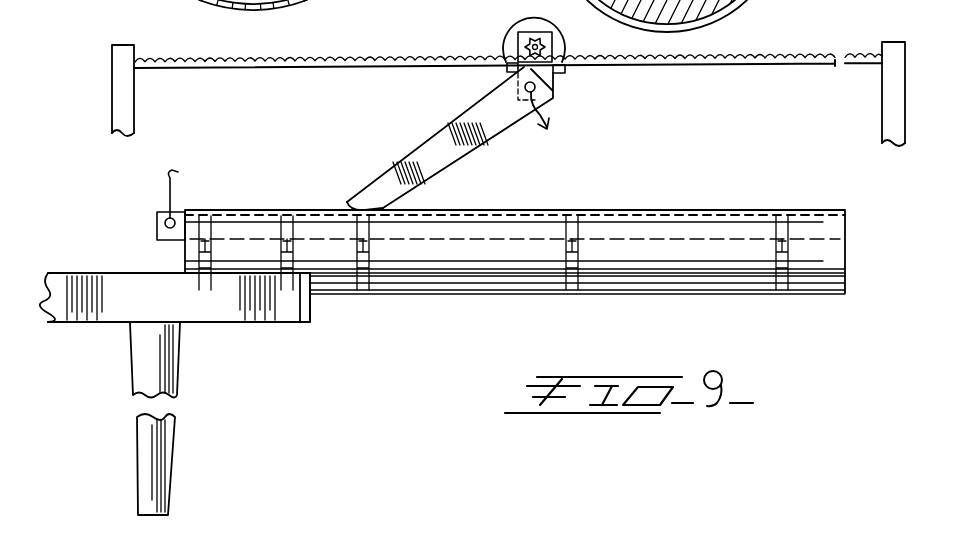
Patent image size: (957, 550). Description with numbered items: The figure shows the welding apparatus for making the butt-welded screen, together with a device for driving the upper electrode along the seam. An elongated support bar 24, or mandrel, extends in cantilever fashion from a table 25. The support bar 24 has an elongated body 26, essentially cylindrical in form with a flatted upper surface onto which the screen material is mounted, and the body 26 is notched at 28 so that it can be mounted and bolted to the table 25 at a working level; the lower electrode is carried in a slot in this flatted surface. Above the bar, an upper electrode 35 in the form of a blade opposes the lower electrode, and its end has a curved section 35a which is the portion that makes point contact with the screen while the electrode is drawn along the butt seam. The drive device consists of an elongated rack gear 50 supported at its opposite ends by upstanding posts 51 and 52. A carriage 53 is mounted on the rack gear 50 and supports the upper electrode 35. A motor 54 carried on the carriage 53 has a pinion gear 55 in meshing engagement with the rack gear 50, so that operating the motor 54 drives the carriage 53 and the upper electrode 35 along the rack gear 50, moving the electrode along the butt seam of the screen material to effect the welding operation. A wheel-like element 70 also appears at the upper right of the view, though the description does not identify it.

The support bar 24 is at (845, 240).
The table 25 is at (108, 273).
The elongated body 26 is at (647, 280).
The notch 28 is at (297, 277).
The upper electrode 35 is at (490, 122).
The curved section 35a is at (342, 207).
The rack gear 50 is at (667, 69).
The upstanding post 51 is at (120, 103).
The upstanding post 52 is at (893, 99).
The carriage 53 is at (565, 75).
The motor 54 is at (508, 38).
The pinion gear 55 is at (537, 42).
The wheel 70 is at (706, 16).